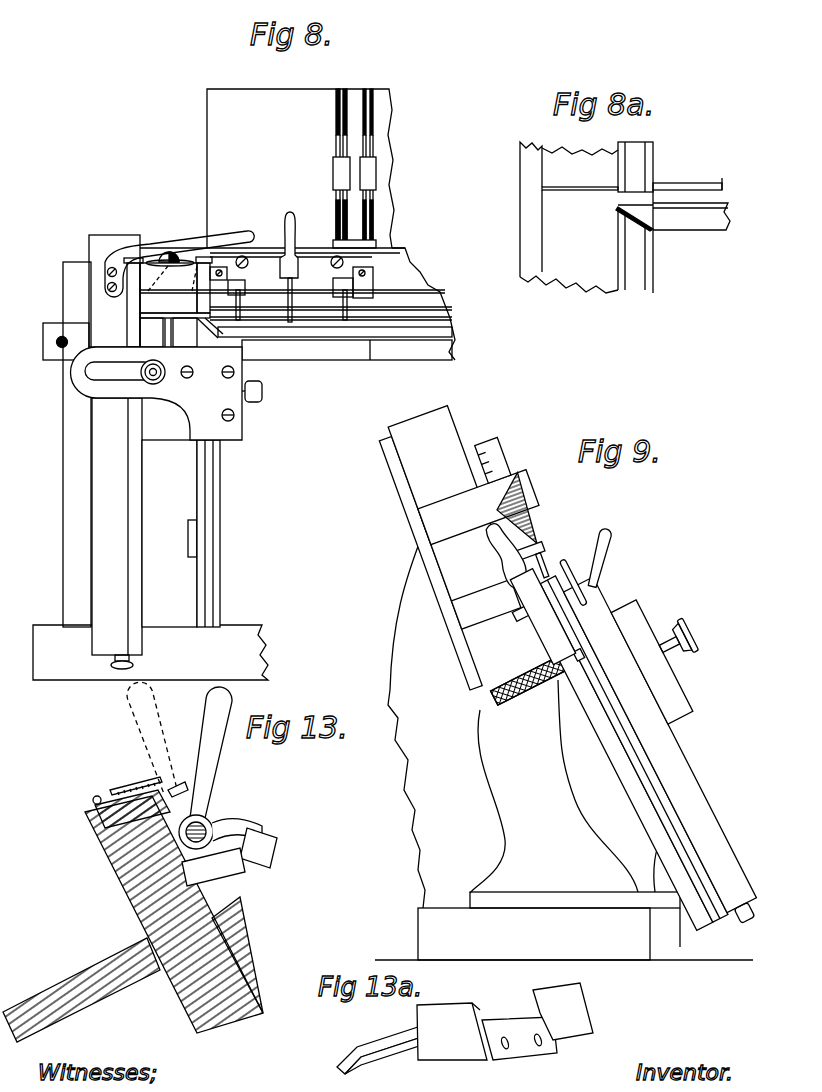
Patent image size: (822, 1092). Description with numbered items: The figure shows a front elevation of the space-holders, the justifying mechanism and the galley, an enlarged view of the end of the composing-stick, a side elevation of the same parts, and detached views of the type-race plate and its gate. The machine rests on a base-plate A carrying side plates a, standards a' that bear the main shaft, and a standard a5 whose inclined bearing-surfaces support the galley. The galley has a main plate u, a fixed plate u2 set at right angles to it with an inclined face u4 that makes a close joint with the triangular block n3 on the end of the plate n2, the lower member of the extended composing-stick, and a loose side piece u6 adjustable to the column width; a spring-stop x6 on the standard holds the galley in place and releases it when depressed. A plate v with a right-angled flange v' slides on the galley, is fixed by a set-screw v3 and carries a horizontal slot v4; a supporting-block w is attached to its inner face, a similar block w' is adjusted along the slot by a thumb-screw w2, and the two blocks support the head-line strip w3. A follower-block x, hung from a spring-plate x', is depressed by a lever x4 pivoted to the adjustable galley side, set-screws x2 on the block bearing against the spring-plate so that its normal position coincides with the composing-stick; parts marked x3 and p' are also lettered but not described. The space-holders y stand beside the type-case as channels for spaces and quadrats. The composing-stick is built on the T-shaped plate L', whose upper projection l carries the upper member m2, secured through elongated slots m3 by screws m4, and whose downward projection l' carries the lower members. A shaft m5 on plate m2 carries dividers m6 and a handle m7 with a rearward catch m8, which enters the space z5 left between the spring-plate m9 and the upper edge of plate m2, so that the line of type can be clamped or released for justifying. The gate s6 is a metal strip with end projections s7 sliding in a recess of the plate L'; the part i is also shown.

In FIG. 8, the space-holder y is at (300, 168).
In FIG. 9, the space-holder y is at (458, 548).
In FIG. 8, the post x3 is at (203, 257).
In FIG. 8, the lever x4 is at (239, 239).
In FIG. 8, the spring-plate x' is at (170, 253).
In FIG. 8, the set-screws x2 is at (168, 283).
In FIG. 8, the follower-block x is at (168, 288).
In FIG. 8, the spring-stop x6 is at (66, 339).
In FIG. 8, the head-line strip w3 is at (133, 321).
In FIG. 8A, the head-line strip w3 is at (620, 205).
In FIG. 8, the block w' is at (151, 332).
In FIG. 8, the supporting-block w is at (185, 332).
In FIG. 8, the inclined face u4 is at (175, 318).
In FIG. 8A, the inclined face u4 is at (622, 218).
In FIG. 8, the triangular block n3 is at (217, 328).
In FIG. 8A, the triangular block n3 is at (656, 192).
In FIG. 8, the plate n2 is at (291, 331).
In FIG. 8A, the plate n2 is at (691, 216).
In FIG. 8, the dividers m6 is at (293, 298).
In FIG. 13, the dividers m6 is at (257, 848).
In FIG. 8, the thumb-screw w2 is at (148, 364).
In FIG. 8, the horizontal slot v4 is at (84, 371).
In FIG. 8, the plate v is at (157, 393).
In FIG. 8, the set-screw v3 is at (263, 397).
In FIG. 8, the right-angled flange v' is at (234, 450).
In FIG. 8, the loose side piece u6 is at (130, 490).
In FIG. 8A, the loose side piece u6 is at (520, 235).
In FIG. 8, the main plate u is at (169, 533).
In FIG. 8, the fixed plate u2 is at (214, 500).
In FIG. 8A, the fixed plate u2 is at (654, 268).
In FIG. 8, the base-plate A is at (150, 652).
In FIG. 9, the base-plate A is at (564, 934).
In FIG. 8, the foot p' is at (130, 665).
In FIG. 9, the side pieces a is at (534, 720).
In FIG. 9, the standard a5 is at (580, 818).
In FIG. 9, the standards a' is at (658, 862).
In FIG. 13, the T-shaped plate L' is at (81, 990).
In FIG. 13A, the T-shaped plate L' is at (379, 1048).
In FIG. 13, the upper projection l is at (174, 914).
In FIG. 13, the downward projection l' is at (205, 955).
In FIG. 13A, the downward projection l' is at (449, 1068).
In FIG. 13, the elongated slots m3 is at (110, 848).
In FIG. 13, the intervening space z5 is at (126, 789).
In FIG. 13, the spring-plate m9 is at (93, 801).
In FIG. 13, the handle m7 is at (179, 754).
In FIG. 13, the catch m8 is at (182, 782).
In FIG. 13, the screws or pins m4 is at (185, 818).
In FIG. 13, the shaft m5 is at (216, 830).
In FIG. 13, the plate m2 is at (235, 908).
In FIG. 13A, the plate i is at (431, 1014).
In FIG. 13A, the gate s6 is at (519, 1038).
In FIG. 13A, the projections s7 is at (548, 1016).